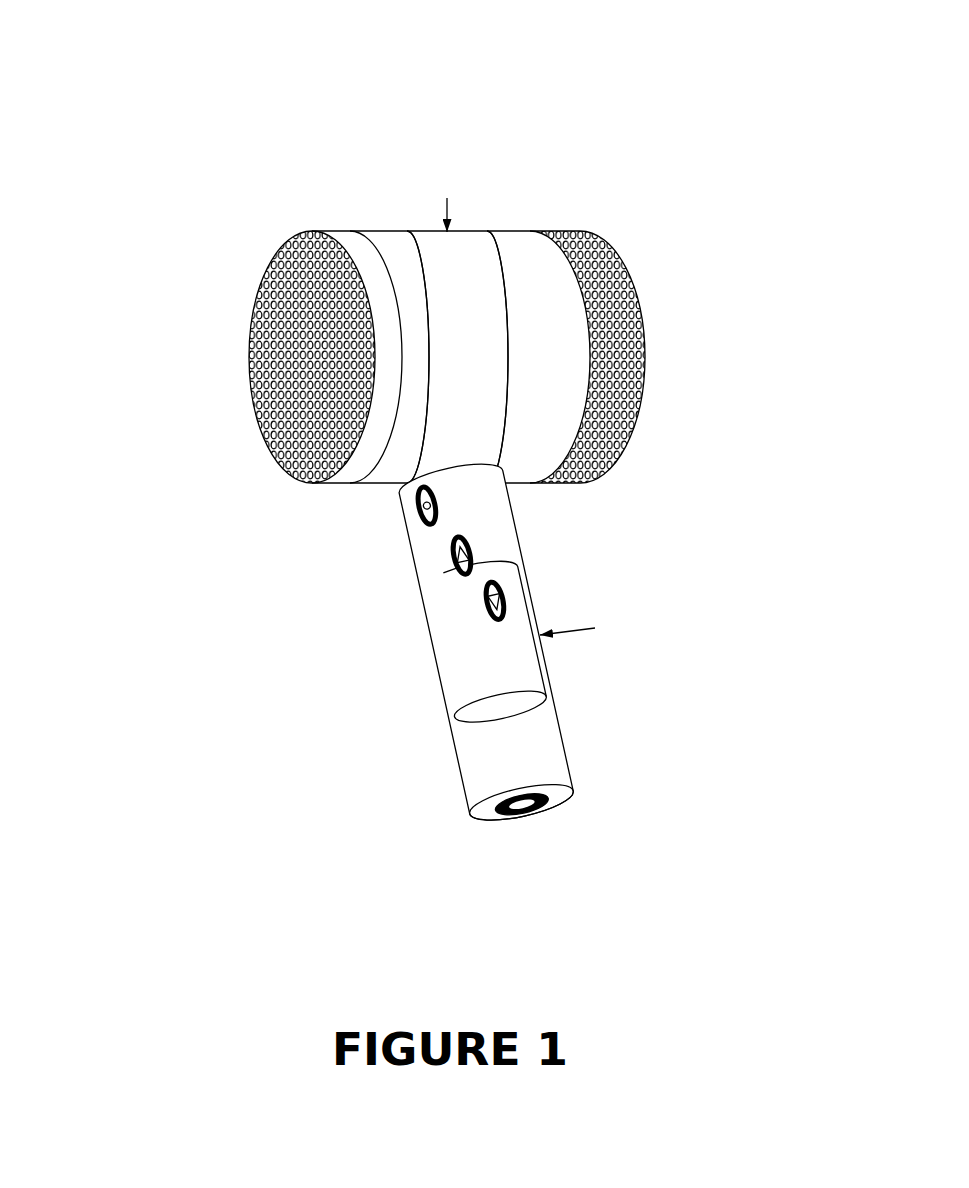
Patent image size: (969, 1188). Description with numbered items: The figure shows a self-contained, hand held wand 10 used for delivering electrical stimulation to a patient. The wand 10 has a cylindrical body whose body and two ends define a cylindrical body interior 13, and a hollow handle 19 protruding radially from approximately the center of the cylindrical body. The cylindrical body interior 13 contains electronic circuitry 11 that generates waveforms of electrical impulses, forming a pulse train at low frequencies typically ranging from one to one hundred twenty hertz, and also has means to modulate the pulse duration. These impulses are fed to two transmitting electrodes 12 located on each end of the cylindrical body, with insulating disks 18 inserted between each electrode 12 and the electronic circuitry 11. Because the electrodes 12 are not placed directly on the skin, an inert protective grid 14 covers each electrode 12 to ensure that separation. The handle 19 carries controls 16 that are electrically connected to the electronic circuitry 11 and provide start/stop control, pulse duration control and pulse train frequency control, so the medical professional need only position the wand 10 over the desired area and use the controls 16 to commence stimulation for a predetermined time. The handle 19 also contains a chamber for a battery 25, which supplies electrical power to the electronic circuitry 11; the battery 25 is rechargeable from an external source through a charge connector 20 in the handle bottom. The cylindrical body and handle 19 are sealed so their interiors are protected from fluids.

The wand 10 is at (437, 430).
The electronic circuitry 11 is at (490, 344).
The transmitting electrode 12 is at (333, 483).
The cylindrical body interior 13 is at (525, 287).
The protective grid 14 is at (253, 297).
The controls 16 is at (420, 620).
The insulating disk 18 is at (376, 77).
The handle 19 is at (552, 753).
The charge connector 20 is at (495, 813).
The battery 25 is at (468, 673).